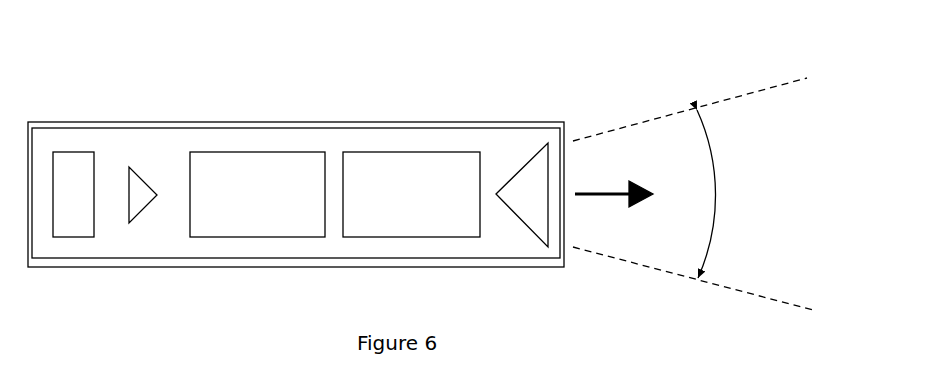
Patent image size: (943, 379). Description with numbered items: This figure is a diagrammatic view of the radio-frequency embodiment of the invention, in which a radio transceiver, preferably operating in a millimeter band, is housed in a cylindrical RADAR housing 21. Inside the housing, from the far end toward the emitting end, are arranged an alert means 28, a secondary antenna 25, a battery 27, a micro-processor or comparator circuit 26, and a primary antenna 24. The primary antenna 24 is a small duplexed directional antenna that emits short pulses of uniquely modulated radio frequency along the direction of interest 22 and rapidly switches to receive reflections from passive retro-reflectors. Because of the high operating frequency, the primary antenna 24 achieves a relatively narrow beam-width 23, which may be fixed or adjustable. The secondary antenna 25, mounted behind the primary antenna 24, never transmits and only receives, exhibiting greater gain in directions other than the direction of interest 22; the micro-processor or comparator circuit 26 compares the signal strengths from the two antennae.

The cylindrical RADAR housing 21 is at (188, 263).
The direction of interest 22 is at (610, 198).
The beam-width 23 is at (712, 150).
The primary antenna 24 is at (527, 200).
The secondary antenna 25 is at (139, 203).
The micro-processor or comparator circuit 26 is at (421, 200).
The battery 27 is at (248, 180).
The alert means 28 is at (72, 180).